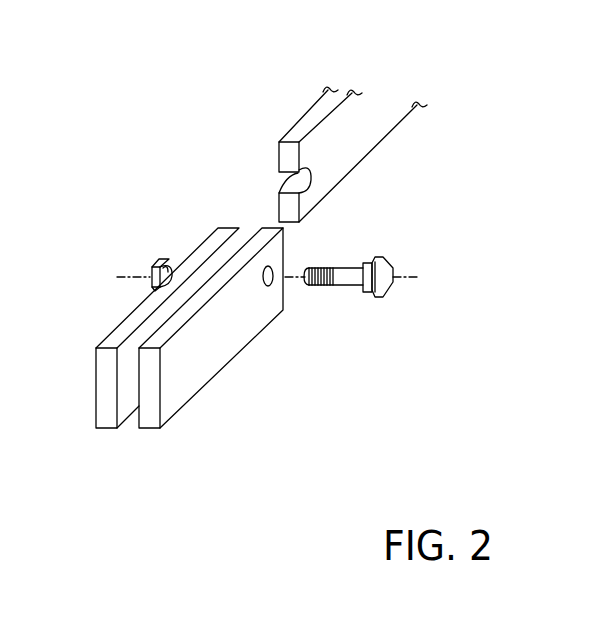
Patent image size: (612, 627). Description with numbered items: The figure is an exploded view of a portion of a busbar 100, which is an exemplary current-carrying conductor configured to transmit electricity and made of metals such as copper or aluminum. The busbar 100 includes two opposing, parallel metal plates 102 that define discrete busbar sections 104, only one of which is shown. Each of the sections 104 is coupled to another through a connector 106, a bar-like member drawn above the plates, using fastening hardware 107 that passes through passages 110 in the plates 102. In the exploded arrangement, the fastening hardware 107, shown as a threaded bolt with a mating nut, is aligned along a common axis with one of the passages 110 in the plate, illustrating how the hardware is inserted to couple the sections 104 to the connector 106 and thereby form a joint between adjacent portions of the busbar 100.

The busbar 100 is at (205, 112).
The metal plates 102 is at (165, 330).
The busbar sections 104 is at (130, 432).
The connector 106 is at (389, 133).
The fastening hardware 107 is at (386, 283).
The passages 110 is at (274, 284).